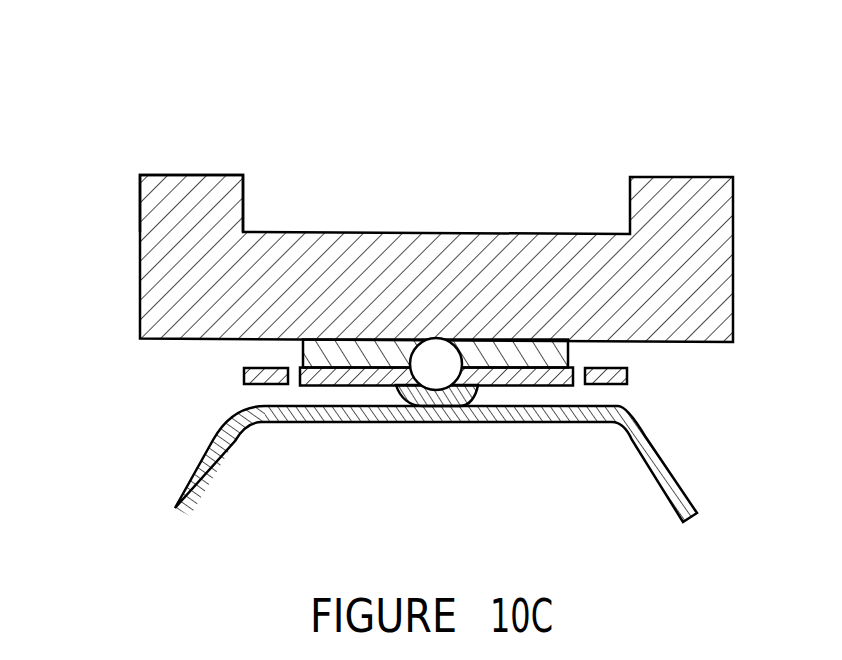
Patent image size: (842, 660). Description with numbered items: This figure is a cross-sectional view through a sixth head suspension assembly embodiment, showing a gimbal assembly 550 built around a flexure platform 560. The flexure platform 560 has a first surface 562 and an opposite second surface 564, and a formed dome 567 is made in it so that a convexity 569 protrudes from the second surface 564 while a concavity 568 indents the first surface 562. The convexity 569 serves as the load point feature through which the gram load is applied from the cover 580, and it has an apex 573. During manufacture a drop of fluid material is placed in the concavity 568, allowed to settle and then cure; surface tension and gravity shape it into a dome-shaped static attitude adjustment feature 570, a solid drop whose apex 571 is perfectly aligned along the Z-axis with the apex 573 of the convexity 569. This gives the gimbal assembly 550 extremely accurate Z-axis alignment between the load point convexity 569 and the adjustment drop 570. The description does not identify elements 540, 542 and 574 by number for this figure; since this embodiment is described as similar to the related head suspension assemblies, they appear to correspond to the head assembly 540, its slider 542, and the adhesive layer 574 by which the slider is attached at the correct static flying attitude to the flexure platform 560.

The housing 540 is at (686, 166).
The housing flange 542 is at (190, 205).
The gimbal assembly 550 is at (524, 146).
The flexure platform 560 is at (530, 388).
The first surface 562 is at (555, 364).
The second surface 564 is at (402, 391).
The formed dome 567 is at (445, 402).
The concavity 568 is at (412, 387).
The convexity 569 is at (437, 404).
The static attitude adjustment feature 570 is at (463, 342).
The apex 571 is at (430, 338).
The apex 573 is at (440, 405).
The substrate 574 is at (307, 353).
The cover 580 is at (527, 423).